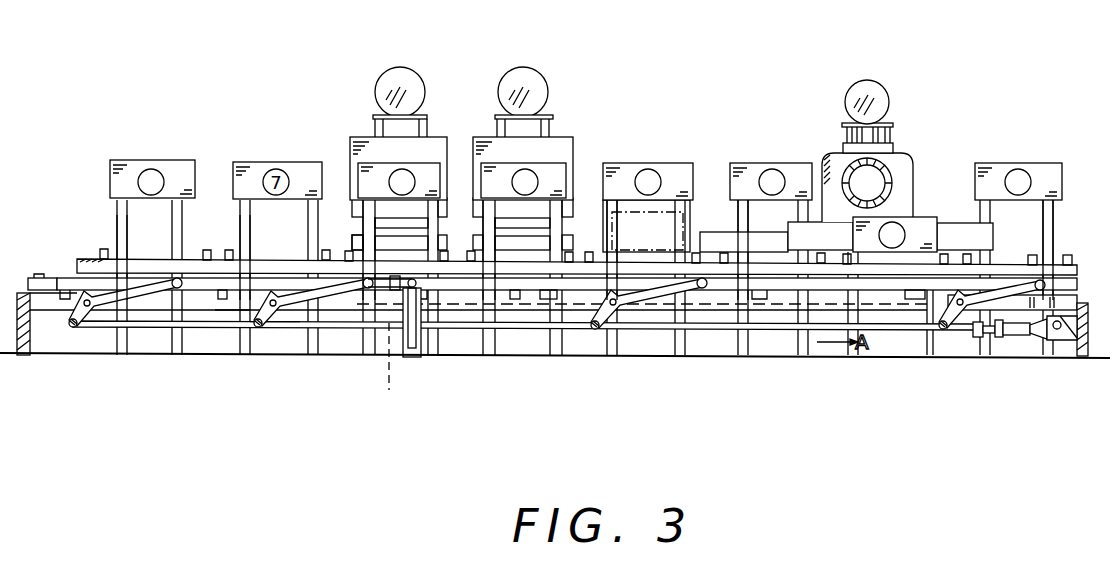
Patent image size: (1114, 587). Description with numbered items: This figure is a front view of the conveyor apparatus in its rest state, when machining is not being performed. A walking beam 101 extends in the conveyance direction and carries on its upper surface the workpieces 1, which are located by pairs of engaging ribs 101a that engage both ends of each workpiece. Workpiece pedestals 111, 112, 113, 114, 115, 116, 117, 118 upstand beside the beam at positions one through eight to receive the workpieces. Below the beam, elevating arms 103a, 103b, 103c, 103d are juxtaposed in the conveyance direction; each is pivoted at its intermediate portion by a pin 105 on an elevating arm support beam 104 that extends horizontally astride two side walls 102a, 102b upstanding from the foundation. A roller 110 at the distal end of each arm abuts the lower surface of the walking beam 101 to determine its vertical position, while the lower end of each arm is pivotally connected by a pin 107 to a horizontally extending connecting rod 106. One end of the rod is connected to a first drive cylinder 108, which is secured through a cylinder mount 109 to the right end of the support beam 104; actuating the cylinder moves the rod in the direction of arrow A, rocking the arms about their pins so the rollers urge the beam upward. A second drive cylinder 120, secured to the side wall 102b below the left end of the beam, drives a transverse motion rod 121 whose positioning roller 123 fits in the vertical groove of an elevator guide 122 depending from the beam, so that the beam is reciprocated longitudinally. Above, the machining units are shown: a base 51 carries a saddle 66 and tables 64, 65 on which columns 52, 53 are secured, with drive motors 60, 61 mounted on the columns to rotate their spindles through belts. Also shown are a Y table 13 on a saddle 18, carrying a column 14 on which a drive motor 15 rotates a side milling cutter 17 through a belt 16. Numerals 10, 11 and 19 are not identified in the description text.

The workpiece 1 is at (166, 163).
The drive unit 10 is at (882, 146).
The base 11 is at (906, 356).
The Y table 13 is at (830, 228).
The column 14 is at (893, 163).
The drive motor 15 is at (877, 93).
The belt 16 is at (847, 140).
The side milling cutter 17 is at (873, 183).
The saddle 18 is at (967, 232).
The support block 19 is at (716, 240).
The base 51 is at (515, 290).
The column 52 is at (568, 143).
The column 53 is at (372, 145).
The drive motor 60 is at (532, 78).
The drive motor 61 is at (414, 78).
The table 64 is at (545, 299).
The table 65 is at (350, 240).
The saddle 66 is at (365, 290).
The walking beam 101 is at (470, 276).
The engaging ribs 101a is at (1068, 256).
The side wall 102a is at (1087, 358).
The side wall 102b is at (42, 355).
The elevating arm 103a is at (962, 322).
The elevating arm 103b is at (640, 312).
The elevating arm 103c is at (288, 312).
The elevating arm 103d is at (134, 302).
The elevating arm support beam 104 is at (722, 311).
The pin 105 is at (278, 328).
The connecting rod 106 is at (797, 331).
The pin 107 is at (232, 312).
The first drive cylinder 108 is at (1017, 338).
The cylinder mount 109 is at (1058, 341).
The roller 110 is at (1033, 266).
The workpiece pedestal 111 is at (1053, 215).
The workpiece pedestal 112 is at (915, 300).
The workpiece pedestal 113 is at (742, 207).
The workpiece pedestal 114 is at (612, 217).
The workpiece pedestal 115 is at (483, 222).
The workpiece pedestal 116 is at (363, 225).
The workpiece pedestal 117 is at (245, 215).
The workpiece pedestal 118 is at (115, 214).
The second drive cylinder 120 is at (55, 278).
The transverse motion rod 121 is at (222, 289).
The elevator guide 122 is at (385, 392).
The positioning roller 123 is at (411, 358).